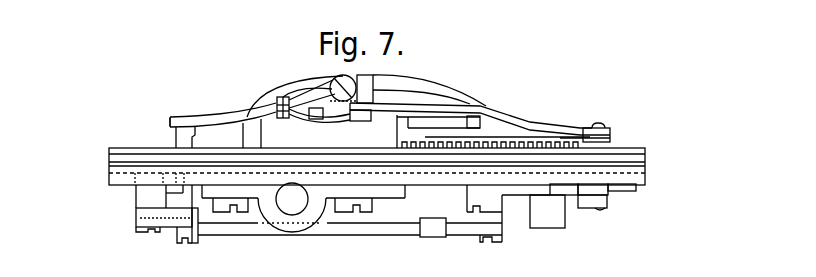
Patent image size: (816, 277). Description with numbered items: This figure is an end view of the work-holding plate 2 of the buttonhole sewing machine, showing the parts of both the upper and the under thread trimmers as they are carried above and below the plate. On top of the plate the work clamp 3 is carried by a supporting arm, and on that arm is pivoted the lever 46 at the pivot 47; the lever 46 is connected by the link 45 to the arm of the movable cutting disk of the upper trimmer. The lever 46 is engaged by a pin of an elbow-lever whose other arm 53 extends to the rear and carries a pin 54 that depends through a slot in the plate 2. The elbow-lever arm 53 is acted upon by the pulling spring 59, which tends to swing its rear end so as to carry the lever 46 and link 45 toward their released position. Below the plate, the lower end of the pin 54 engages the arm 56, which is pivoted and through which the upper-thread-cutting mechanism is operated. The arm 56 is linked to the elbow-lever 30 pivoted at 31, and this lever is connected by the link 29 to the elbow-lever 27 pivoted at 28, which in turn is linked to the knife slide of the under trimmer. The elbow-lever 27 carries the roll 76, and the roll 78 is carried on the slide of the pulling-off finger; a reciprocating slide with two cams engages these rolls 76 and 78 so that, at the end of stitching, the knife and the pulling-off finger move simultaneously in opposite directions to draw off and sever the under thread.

The work-holding plate 2 is at (126, 147).
The work clamp 3 is at (527, 136).
The elbow-lever 27 is at (522, 196).
The pivot 28 is at (475, 213).
The link 29 is at (252, 230).
The elbow-lever 30 is at (163, 212).
The pivot 31 is at (160, 229).
The link 45 is at (451, 108).
The lever 46 is at (363, 118).
The pivot 47 is at (323, 117).
The arm of elbow-lever 53 is at (220, 116).
The pin 54 is at (170, 123).
The arm 56 is at (172, 201).
The pulling spring 59 is at (278, 99).
The roll 76 is at (555, 218).
The roll 78 is at (598, 209).